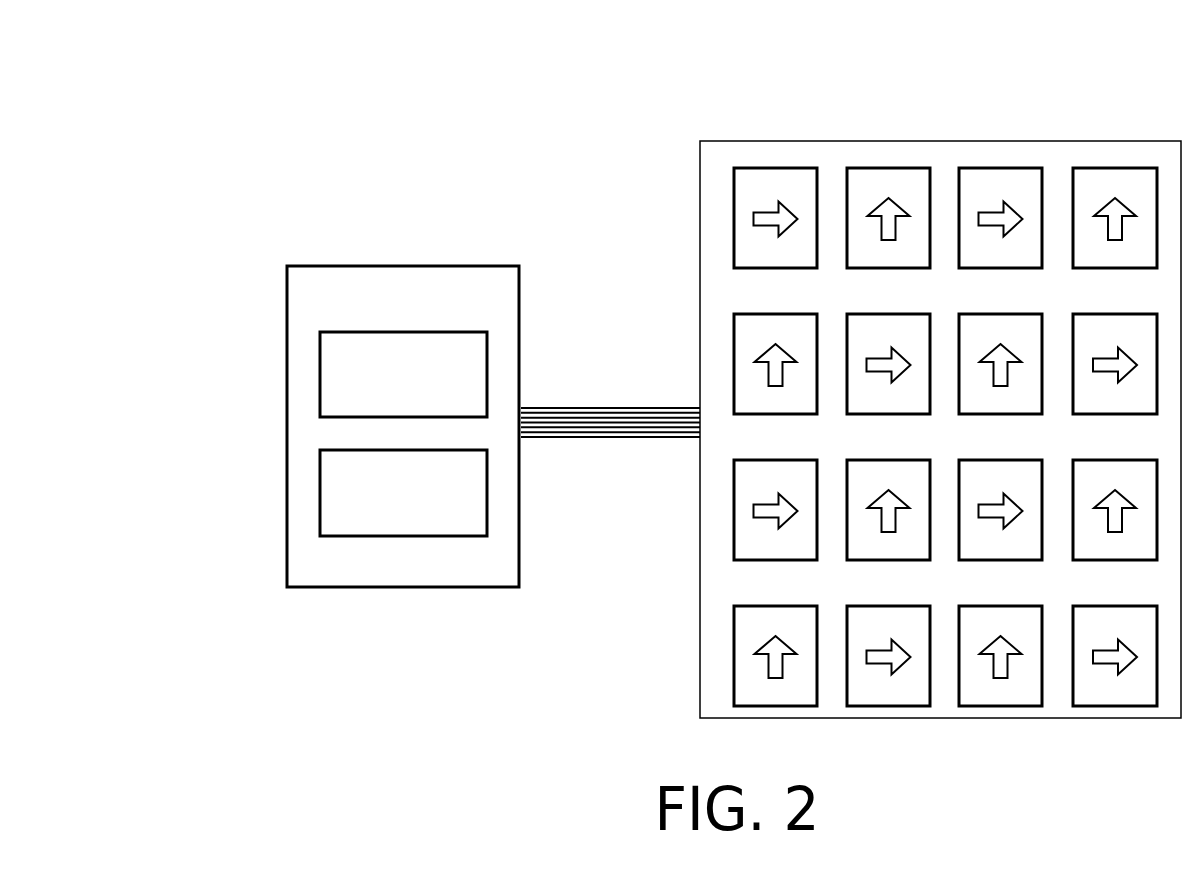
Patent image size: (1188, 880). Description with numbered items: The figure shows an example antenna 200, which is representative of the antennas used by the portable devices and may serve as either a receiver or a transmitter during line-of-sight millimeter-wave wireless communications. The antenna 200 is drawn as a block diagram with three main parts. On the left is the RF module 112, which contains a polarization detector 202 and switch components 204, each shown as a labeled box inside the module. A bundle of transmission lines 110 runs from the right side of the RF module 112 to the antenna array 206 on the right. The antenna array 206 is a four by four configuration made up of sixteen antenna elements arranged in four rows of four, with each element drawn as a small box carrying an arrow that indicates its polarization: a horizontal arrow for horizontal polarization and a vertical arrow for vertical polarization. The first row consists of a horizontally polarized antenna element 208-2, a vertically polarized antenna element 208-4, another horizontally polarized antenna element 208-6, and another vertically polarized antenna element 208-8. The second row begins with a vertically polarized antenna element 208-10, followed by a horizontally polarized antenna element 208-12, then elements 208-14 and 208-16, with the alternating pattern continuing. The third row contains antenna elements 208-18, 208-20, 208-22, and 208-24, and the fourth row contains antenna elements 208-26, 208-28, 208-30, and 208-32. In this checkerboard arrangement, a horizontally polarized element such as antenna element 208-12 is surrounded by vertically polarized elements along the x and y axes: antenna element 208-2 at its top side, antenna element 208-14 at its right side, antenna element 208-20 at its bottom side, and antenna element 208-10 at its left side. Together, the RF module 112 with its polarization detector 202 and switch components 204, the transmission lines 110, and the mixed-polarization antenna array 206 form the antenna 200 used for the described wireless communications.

The antenna 200 is at (224, 78).
The RF module 112 is at (403, 426).
The polarization detector 202 is at (403, 374).
The switch components 204 is at (403, 493).
The transmission lines 110 is at (655, 393).
The antenna array 206 is at (793, 116).
The horizontally polarized antenna element 208-2 is at (775, 218).
The vertically polarized antenna element 208-4 is at (888, 218).
The horizontally polarized antenna element 208-6 is at (1000, 218).
The vertically polarized antenna element 208-8 is at (1115, 218).
The vertically polarized antenna element 208-10 is at (775, 364).
The horizontally polarized antenna element 208-12 is at (888, 364).
The vertically polarized antenna element 208-14 is at (1000, 364).
The antenna element 208-16 is at (1115, 364).
The antenna element 208-18 is at (775, 510).
The vertically polarized antenna element 208-20 is at (888, 510).
The antenna element 208-22 is at (1000, 510).
The antenna element 208-24 is at (1115, 510).
The antenna element 208-26 is at (775, 656).
The antenna element 208-28 is at (888, 656).
The antenna element 208-30 is at (1000, 656).
The antenna element 208-32 is at (1115, 656).